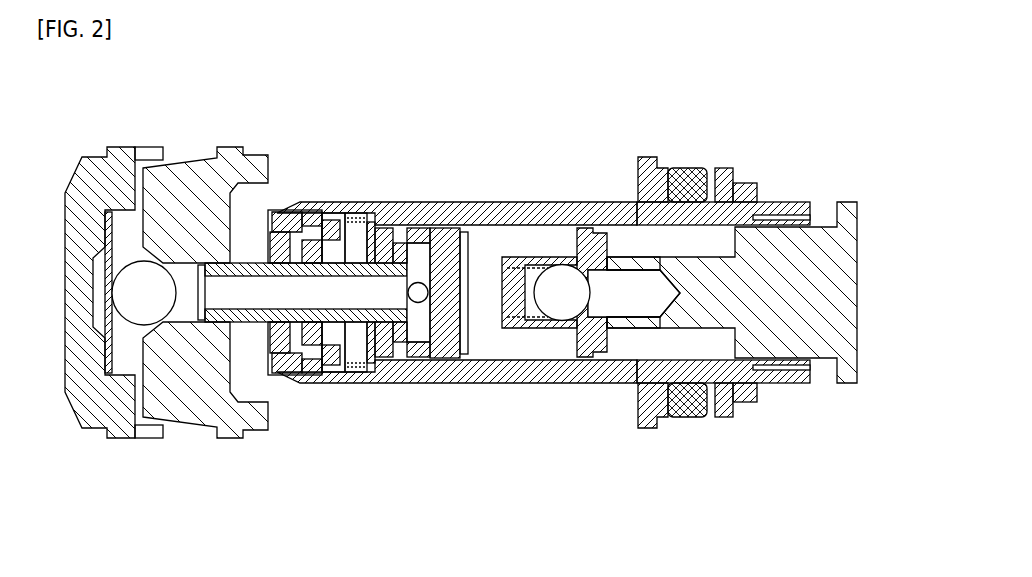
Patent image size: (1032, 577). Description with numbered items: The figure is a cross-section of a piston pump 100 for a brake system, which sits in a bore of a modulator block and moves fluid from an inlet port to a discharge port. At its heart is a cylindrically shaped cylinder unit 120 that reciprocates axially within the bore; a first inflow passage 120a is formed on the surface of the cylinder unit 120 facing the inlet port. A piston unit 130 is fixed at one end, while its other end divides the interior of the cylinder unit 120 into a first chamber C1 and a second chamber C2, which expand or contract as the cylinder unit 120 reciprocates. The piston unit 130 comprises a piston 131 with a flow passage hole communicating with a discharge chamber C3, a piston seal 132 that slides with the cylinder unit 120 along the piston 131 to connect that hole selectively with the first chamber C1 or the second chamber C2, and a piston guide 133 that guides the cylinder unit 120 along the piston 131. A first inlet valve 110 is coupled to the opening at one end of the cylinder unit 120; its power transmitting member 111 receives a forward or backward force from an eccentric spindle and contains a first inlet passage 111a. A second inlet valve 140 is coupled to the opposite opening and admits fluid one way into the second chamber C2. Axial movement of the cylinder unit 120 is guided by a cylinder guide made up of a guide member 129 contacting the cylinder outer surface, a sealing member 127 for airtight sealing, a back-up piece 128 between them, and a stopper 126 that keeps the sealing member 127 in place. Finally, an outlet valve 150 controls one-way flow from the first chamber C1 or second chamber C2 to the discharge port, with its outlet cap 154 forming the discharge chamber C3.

The piston pump 100 is at (515, 85).
The first inlet valve 110 is at (550, 254).
The power transmitting member 111 is at (838, 288).
The first inlet passage 111a is at (636, 264).
The cylinder unit 120 is at (542, 378).
The first inflow passage 120a is at (632, 212).
The stopper 126 is at (652, 428).
The sealing member 127 is at (685, 418).
The back-up piece 128 is at (716, 418).
The guide member 129 is at (745, 403).
The piston unit 130 is at (450, 220).
The piston 131 is at (470, 250).
The piston seal 132 is at (386, 234).
The piston guide 133 is at (357, 237).
The second inlet valve 140 is at (324, 206).
The outlet valve 150 is at (238, 449).
The outlet cap 154 is at (103, 172).
The first chamber C1 is at (509, 344).
The second chamber C2 is at (362, 344).
The discharge chamber C3 is at (136, 360).